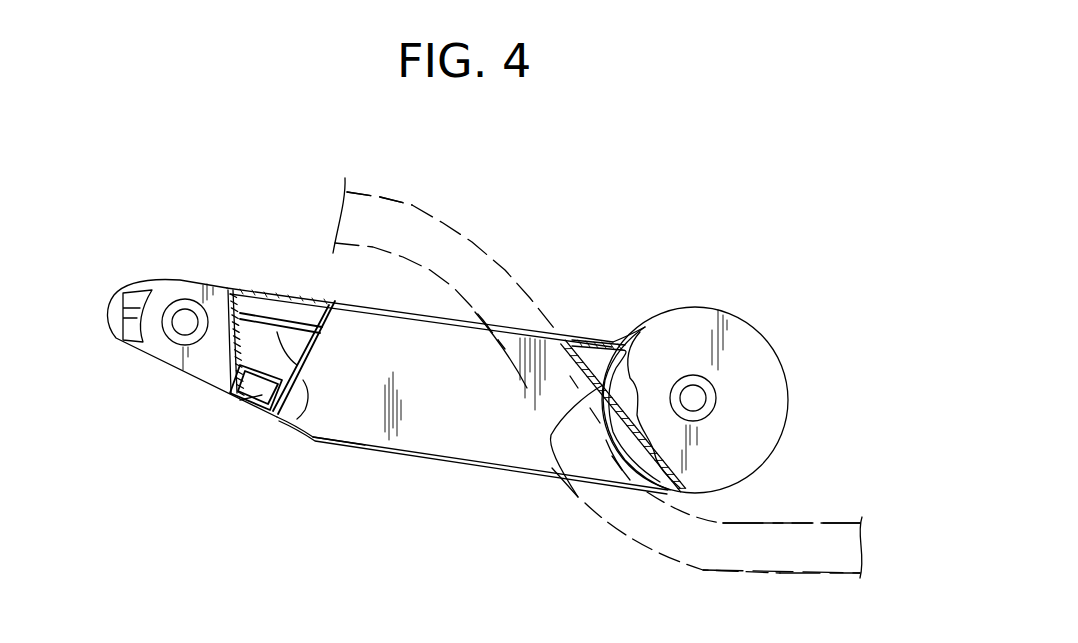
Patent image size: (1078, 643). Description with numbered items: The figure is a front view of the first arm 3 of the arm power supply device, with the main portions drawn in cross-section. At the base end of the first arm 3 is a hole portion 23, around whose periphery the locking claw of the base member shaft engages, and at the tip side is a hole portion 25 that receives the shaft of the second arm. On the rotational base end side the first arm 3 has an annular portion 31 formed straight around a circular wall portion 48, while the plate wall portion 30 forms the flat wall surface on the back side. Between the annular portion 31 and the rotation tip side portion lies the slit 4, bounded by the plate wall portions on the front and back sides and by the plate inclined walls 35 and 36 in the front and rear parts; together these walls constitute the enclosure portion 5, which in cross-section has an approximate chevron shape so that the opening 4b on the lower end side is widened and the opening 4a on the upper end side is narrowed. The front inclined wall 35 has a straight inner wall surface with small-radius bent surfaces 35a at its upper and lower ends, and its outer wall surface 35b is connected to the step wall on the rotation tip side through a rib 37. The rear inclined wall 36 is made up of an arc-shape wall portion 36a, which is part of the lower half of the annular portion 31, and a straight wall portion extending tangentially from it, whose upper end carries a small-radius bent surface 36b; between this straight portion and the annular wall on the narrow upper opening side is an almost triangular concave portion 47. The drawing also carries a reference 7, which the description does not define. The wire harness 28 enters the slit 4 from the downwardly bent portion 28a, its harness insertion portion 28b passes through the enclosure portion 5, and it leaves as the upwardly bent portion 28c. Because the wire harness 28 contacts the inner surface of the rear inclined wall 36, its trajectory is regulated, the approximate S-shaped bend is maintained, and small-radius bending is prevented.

The first arm 3 is at (396, 388).
The slit 4 is at (447, 365).
The opening on the upper end side 4a is at (443, 318).
The opening on the lower end side 4b is at (430, 443).
The enclosure portion 5 is at (363, 447).
The pulley 7 is at (723, 373).
The hole portion 23 is at (693, 398).
The hole portion 25 is at (185, 322).
The wire harness 28 is at (660, 558).
The downwardly bent portion 28a is at (745, 555).
The harness insertion portion 28b is at (540, 380).
The upwardly bent portion 28c is at (405, 225).
The plate wall portion 30 is at (470, 440).
The annular portion 31 is at (789, 358).
The inclined wall 35 is at (290, 422).
The small-radius bent surface 35a is at (342, 300).
The outer wall surface 35b is at (275, 292).
The inclined wall 36 is at (551, 455).
The arc-shape wall portion 36a is at (613, 470).
The small-radius bent surface 36b is at (562, 352).
The rib 37 is at (243, 402).
The concave portion 47 is at (592, 357).
The circular wall portion 48 is at (745, 356).